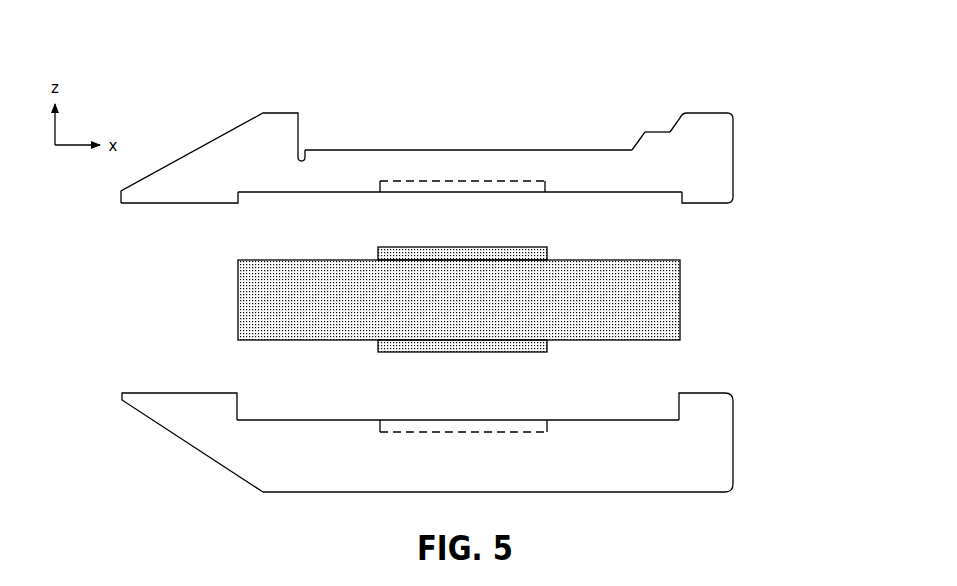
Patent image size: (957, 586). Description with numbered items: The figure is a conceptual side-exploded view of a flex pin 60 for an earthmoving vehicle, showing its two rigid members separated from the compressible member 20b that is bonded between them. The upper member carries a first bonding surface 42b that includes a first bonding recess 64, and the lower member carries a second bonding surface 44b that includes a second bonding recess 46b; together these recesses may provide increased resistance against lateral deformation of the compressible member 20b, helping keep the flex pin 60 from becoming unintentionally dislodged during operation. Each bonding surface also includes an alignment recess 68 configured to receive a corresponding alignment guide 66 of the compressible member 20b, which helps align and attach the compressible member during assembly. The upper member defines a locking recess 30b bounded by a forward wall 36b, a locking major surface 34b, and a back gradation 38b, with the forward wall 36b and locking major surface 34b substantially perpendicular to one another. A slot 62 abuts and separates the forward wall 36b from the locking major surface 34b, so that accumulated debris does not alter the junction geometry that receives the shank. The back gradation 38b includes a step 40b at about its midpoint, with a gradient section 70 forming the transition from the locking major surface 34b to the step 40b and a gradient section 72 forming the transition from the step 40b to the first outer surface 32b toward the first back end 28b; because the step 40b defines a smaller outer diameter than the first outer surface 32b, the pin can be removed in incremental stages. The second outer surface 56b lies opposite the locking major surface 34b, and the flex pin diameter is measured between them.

The flex pin 60 is at (134, 55).
The locking recess 30b is at (298, 95).
The forward wall 36b is at (300, 127).
The slot 62 is at (303, 152).
The locking major surface 34b is at (513, 149).
The gradient section 70 is at (638, 146).
The back gradation 38b is at (680, 112).
The step 40b is at (657, 133).
The gradient section 72 is at (676, 121).
The first back end 28b is at (683, 92).
The first outer surface 32b is at (713, 114).
The first bonding surface 42b is at (655, 194).
The first bonding recess 64 is at (264, 206).
The alignment recess 68 is at (434, 186).
The compressible member 20b is at (459, 298).
The alignment guide 66 is at (524, 249).
The second bonding recess 46b is at (267, 393).
The second bonding surface 44b is at (610, 418).
The second outer surface 56b is at (351, 493).